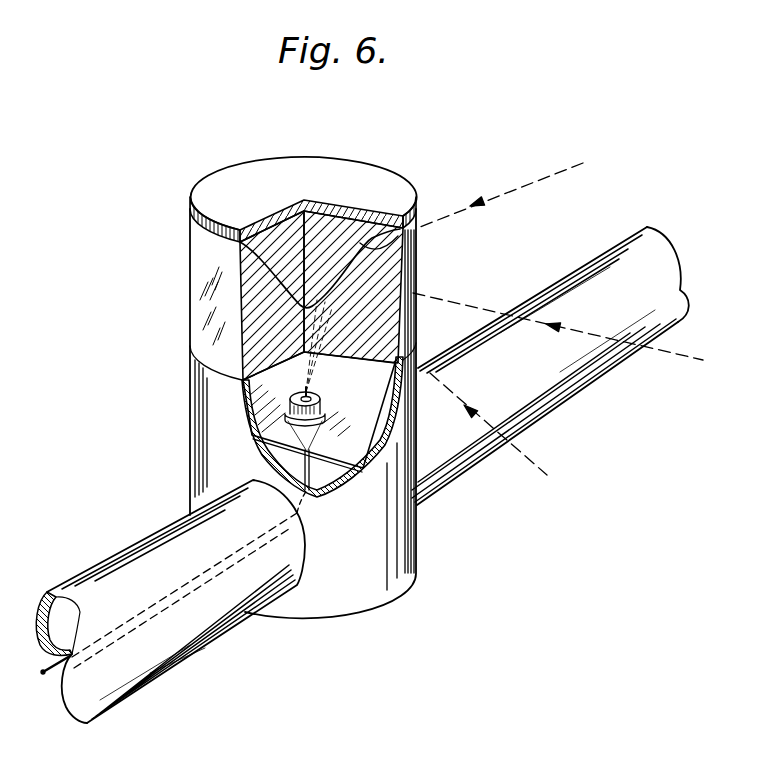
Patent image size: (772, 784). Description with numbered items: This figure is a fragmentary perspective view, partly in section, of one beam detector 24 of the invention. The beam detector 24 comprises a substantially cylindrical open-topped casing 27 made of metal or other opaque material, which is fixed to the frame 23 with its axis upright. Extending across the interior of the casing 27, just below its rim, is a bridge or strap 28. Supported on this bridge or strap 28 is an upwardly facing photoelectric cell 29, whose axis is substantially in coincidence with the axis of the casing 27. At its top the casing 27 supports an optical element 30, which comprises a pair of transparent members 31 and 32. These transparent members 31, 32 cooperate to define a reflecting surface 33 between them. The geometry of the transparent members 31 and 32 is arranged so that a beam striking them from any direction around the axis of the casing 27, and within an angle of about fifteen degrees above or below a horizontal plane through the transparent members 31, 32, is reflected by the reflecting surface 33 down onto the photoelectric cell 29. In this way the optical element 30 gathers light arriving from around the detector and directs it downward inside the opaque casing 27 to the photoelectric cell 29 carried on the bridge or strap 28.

The frame 23 is at (163, 557).
The beam detector 24 is at (200, 307).
The casing 27 is at (388, 521).
The bridge or strap 28 is at (347, 424).
The photoelectric cell 29 is at (315, 395).
The optical element 30 is at (163, 258).
The transparent member 31 is at (288, 224).
The transparent member 32 is at (240, 333).
The reflecting surface 33 is at (395, 257).